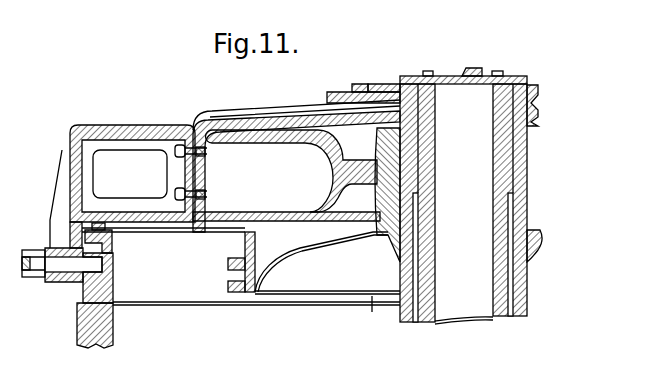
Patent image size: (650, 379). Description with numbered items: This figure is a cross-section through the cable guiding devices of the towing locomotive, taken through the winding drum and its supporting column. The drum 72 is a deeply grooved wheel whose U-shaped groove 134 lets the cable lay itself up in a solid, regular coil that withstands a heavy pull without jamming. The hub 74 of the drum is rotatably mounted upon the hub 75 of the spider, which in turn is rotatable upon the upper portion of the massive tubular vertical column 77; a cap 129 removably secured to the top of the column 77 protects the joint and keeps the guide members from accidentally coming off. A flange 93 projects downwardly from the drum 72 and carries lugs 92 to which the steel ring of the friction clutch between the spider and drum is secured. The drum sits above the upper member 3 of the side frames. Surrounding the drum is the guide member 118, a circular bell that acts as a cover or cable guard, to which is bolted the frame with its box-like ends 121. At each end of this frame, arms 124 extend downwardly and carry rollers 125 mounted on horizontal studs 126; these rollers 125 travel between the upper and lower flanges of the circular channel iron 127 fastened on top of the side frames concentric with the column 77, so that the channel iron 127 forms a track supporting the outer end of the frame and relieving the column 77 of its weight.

The upper member of the side frames 3 is at (82, 326).
The drum 72 is at (223, 130).
The hub of the drum 74 is at (378, 138).
The hub of the spider 75 is at (402, 272).
The column 77 is at (430, 315).
The lugs 92 is at (228, 285).
The flange 93 is at (253, 260).
The guide member 118 is at (288, 119).
The box-like ends 121 is at (139, 131).
The arms 124 is at (52, 228).
The rollers 125 is at (115, 243).
The studs 126 is at (63, 268).
The channel iron 127 is at (115, 287).
The cap 129 is at (473, 73).
The groove 134 is at (338, 178).